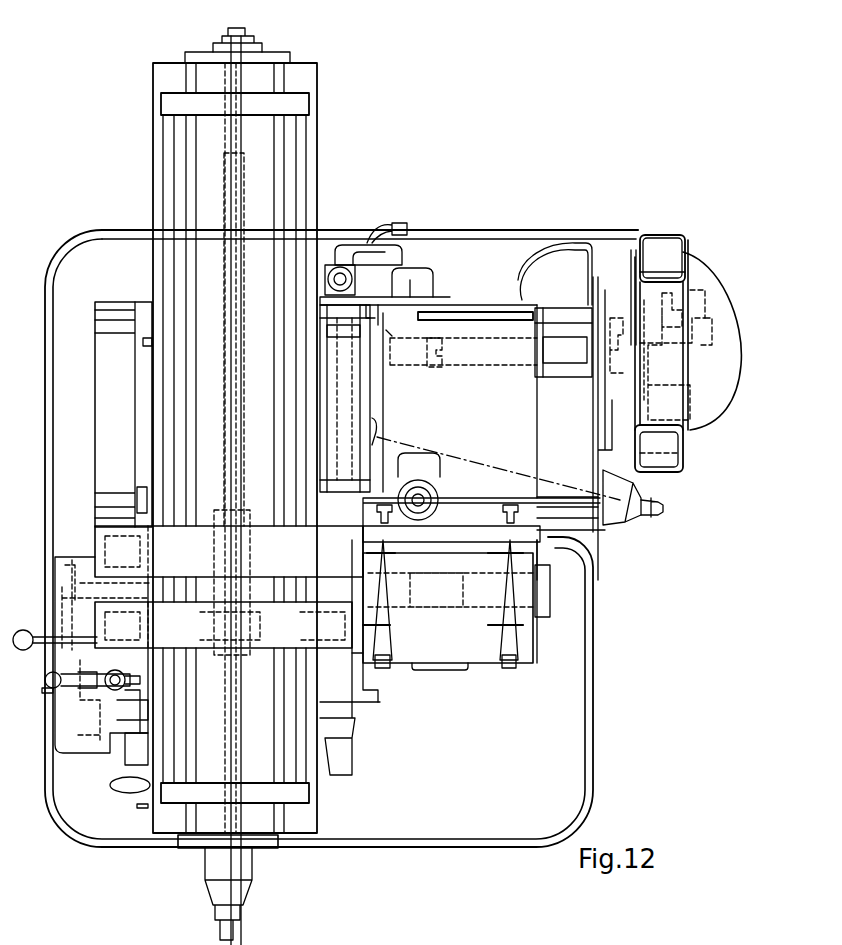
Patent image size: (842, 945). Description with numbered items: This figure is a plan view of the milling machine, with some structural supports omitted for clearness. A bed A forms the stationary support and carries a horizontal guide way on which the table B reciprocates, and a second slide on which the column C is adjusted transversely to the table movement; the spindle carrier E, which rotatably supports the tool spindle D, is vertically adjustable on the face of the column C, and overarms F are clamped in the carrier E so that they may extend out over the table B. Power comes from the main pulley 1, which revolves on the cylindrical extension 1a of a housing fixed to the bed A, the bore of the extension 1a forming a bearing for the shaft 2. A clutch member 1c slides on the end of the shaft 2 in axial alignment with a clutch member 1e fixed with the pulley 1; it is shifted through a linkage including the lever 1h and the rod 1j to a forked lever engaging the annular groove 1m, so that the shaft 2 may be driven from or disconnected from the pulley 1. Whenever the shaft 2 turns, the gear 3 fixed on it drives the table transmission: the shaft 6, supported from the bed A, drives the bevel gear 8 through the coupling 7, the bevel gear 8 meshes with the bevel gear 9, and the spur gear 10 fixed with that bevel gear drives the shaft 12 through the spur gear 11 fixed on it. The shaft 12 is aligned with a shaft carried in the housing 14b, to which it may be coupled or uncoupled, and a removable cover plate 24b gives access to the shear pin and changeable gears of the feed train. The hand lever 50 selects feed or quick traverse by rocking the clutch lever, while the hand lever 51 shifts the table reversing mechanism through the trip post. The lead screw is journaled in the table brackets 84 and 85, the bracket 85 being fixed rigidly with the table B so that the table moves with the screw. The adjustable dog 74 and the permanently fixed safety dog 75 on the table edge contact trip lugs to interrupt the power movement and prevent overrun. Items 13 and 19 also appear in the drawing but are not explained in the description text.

The bed A is at (590, 702).
The table B is at (155, 198).
The column C is at (535, 438).
The tool spindle D is at (430, 577).
The spindle carrier E is at (533, 637).
The overarms F is at (212, 588).
The main pulley 1 is at (652, 273).
The cylindrical extension 1a is at (653, 330).
The clutch member 1e is at (676, 298).
The clutch member 1c is at (690, 303).
The annular groove 1m is at (700, 325).
The lever 1h is at (387, 225).
The rod 1j is at (472, 230).
The shaft 2 is at (560, 352).
The gear 3 is at (612, 320).
The shaft 6 is at (485, 358).
The coupling 7 is at (438, 365).
The bevel gear 8 is at (388, 337).
The bevel gear 9 is at (380, 320).
The spur gear 10 is at (370, 310).
The spur gear 11 is at (331, 265).
The shaft 12 is at (348, 392).
The spindle 13 is at (250, 28).
The housing 14b is at (360, 708).
The section line 19 is at (678, 502).
The cover plate 24b is at (378, 690).
The hand lever 50 is at (22, 633).
The hand lever 51 is at (45, 680).
The dog 74 is at (125, 733).
The dog 75 is at (145, 343).
The table bracket 84 is at (215, 45).
The table bracket 85 is at (265, 845).